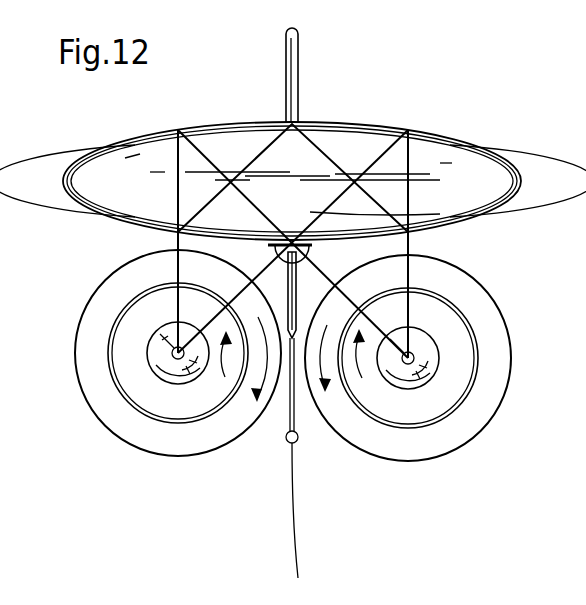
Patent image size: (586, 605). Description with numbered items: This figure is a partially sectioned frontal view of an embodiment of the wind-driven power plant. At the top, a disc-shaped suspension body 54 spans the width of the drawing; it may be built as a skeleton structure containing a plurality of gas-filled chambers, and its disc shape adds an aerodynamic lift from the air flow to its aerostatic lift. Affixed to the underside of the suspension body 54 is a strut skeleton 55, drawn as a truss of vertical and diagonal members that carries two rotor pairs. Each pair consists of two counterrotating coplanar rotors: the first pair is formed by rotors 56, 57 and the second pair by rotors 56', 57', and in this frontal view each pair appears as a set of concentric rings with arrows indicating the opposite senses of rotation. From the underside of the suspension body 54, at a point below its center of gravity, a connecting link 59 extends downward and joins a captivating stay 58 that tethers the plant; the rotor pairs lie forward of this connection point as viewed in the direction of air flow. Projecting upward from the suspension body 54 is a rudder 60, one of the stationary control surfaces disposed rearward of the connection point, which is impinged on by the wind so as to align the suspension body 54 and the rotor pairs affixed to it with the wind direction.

The disc-shaped suspension body 54 is at (450, 162).
The strut skeleton 55 is at (340, 289).
The rotor 56 is at (160, 356).
The rotor 57 is at (178, 392).
The rotor 56' is at (408, 381).
The rotor 57' is at (442, 375).
The captivating stay 58 is at (294, 506).
The connecting link 59 is at (291, 402).
The rudder 60 is at (300, 56).